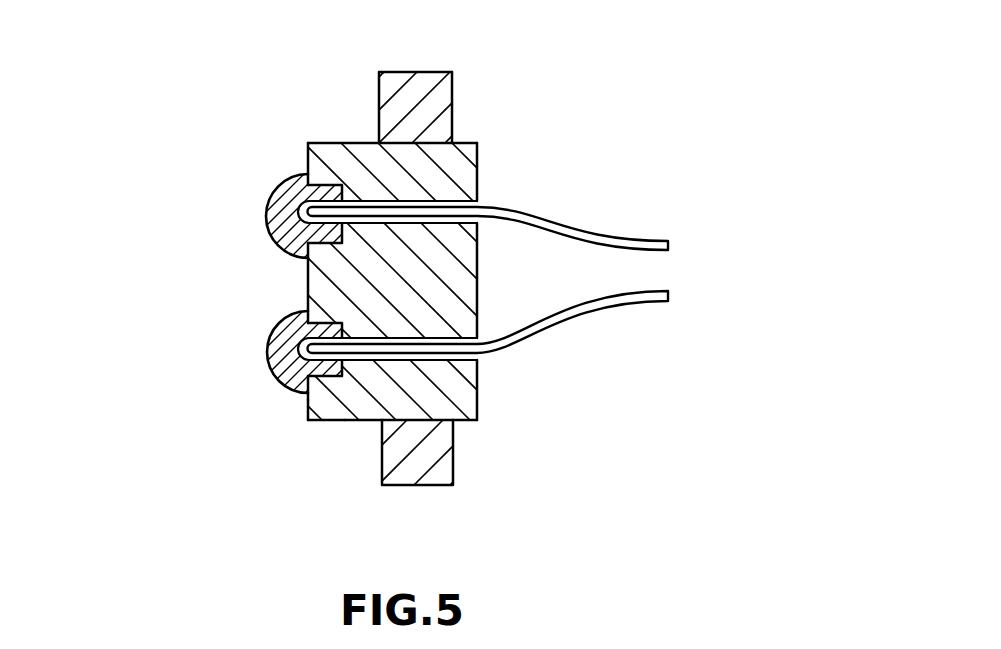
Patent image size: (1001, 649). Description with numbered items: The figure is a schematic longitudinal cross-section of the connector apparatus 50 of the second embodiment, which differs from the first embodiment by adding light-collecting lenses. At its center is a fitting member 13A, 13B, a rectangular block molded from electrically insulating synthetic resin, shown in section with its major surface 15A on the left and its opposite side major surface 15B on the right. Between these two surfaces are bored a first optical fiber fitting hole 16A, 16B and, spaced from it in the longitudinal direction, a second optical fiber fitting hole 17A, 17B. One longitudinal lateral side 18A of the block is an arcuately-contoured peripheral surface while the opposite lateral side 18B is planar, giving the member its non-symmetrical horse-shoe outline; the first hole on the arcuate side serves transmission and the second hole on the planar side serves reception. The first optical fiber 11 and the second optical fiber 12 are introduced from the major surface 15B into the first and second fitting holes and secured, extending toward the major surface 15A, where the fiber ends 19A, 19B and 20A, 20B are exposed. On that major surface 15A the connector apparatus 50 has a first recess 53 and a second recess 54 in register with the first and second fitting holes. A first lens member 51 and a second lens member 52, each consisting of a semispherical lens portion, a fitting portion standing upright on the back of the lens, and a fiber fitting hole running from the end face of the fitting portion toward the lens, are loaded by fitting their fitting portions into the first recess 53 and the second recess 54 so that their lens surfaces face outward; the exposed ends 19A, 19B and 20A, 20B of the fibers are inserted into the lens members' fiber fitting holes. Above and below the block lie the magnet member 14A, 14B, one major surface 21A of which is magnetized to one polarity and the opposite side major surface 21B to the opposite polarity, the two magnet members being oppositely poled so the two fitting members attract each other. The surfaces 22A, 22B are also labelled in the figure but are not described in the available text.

The connector apparatus 50 is at (513, 55).
The first optical fiber 11 is at (598, 228).
The second optical fiber 12 is at (641, 305).
The fitting member 13A is at (368, 294).
The fitting member 13B is at (318, 284).
The magnet member 14A is at (483, 452).
The magnet member 14B is at (440, 450).
The major surface 15A is at (307, 403).
The opposite side major surface 15B is at (477, 289).
The first optical fiber fitting hole 16A is at (200, 138).
The first optical fiber fitting hole 16B is at (307, 145).
The second optical fiber fitting hole 17A is at (407, 476).
The second optical fiber fitting hole 17B is at (360, 422).
The longitudinal lateral side 18A is at (357, 142).
The opposite lateral side 18B is at (325, 422).
The end of optical fiber 19A is at (214, 191).
The end of optical fiber 19B is at (270, 191).
The end of optical fiber 20A is at (199, 368).
The end of optical fiber 20B is at (269, 368).
The major surface of magnet member 21A is at (472, 76).
The opposite side major surface of magnet member 21B is at (379, 86).
The projection side 22A is at (552, 107).
The projection side 22B is at (452, 90).
The first lens member 51 is at (263, 226).
The second lens member 52 is at (280, 316).
The first recess 53 is at (318, 258).
The second recess 54 is at (308, 422).